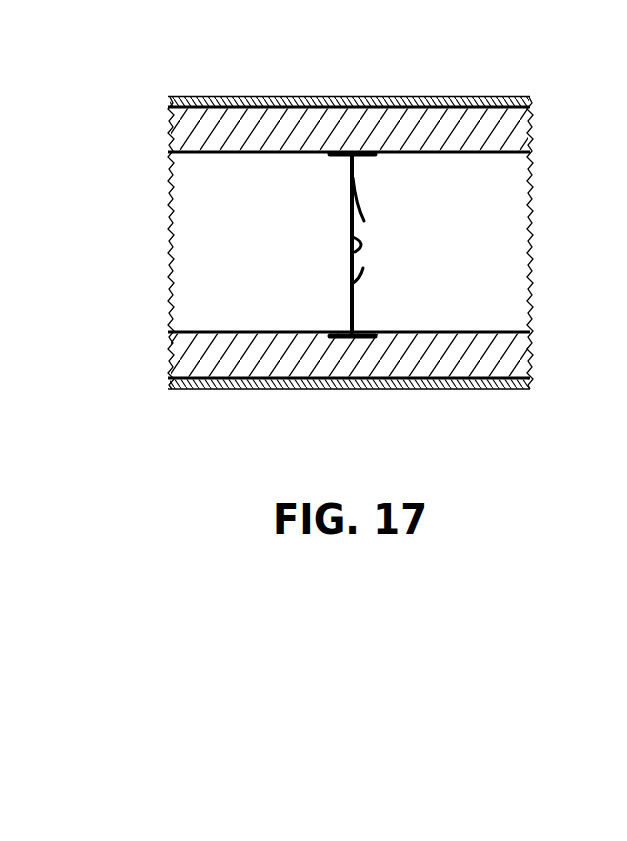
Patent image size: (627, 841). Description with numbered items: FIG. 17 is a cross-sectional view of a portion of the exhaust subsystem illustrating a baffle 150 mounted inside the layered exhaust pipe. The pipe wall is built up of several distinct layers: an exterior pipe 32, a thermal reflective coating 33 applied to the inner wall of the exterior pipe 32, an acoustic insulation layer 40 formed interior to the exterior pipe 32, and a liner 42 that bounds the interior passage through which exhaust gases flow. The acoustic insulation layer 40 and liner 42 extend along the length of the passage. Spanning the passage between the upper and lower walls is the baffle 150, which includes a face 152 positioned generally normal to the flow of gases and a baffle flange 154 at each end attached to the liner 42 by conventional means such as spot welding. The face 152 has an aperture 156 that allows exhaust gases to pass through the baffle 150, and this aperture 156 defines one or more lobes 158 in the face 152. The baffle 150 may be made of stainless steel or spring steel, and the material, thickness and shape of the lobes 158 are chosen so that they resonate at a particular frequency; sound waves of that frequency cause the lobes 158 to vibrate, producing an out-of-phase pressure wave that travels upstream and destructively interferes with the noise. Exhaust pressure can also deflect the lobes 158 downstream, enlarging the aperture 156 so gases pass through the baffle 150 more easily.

The exterior pipe 32 is at (345, 90).
The thermal reflective coating 33 is at (374, 277).
The acoustic insulation layer 40 is at (237, 130).
The liner 42 is at (530, 139).
The baffle 150 is at (342, 180).
The face 152 is at (350, 189).
The baffle flange 154 is at (367, 150).
The aperture 156 is at (342, 237).
The lobe 158 is at (361, 280).